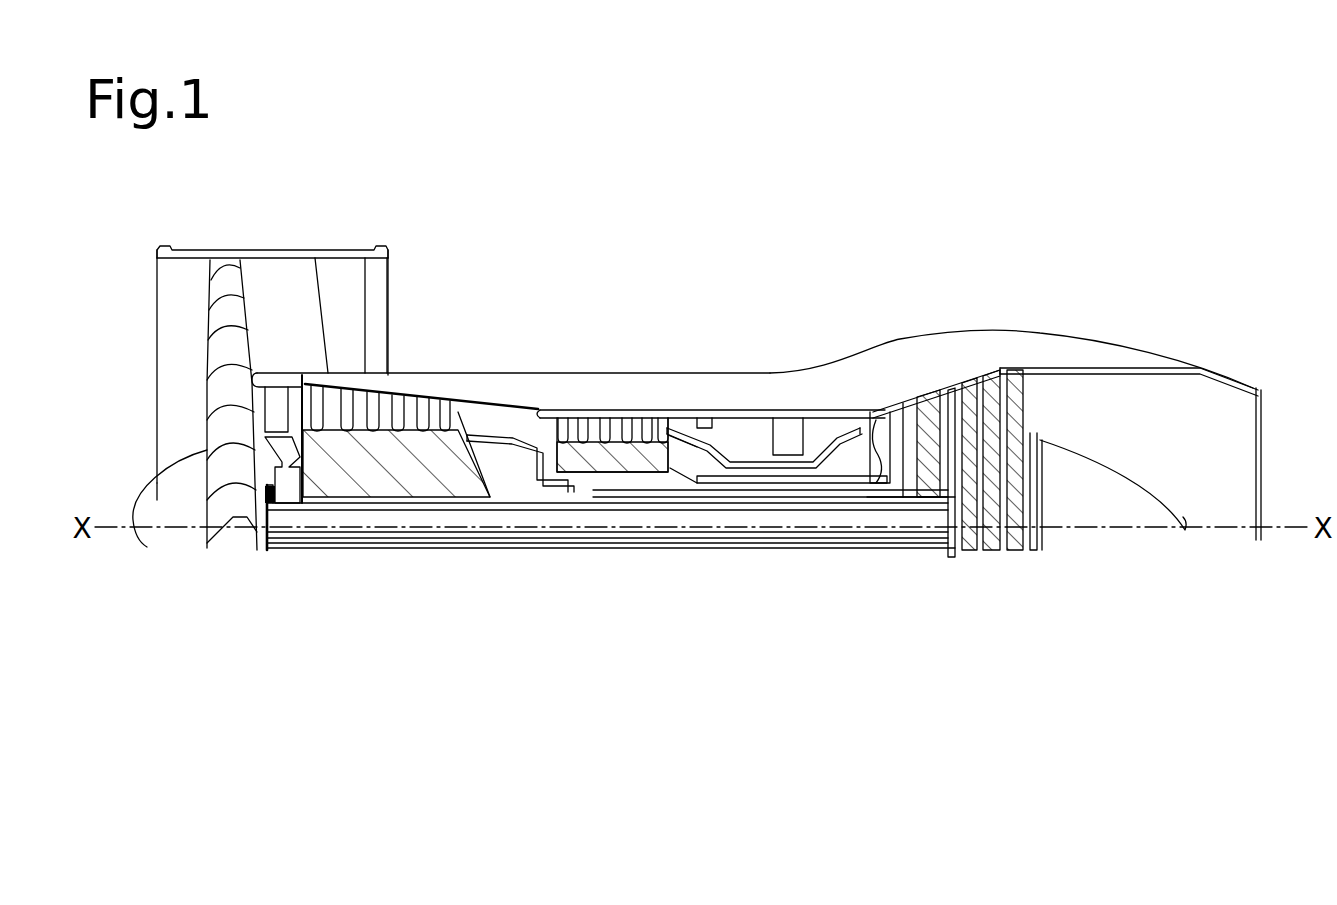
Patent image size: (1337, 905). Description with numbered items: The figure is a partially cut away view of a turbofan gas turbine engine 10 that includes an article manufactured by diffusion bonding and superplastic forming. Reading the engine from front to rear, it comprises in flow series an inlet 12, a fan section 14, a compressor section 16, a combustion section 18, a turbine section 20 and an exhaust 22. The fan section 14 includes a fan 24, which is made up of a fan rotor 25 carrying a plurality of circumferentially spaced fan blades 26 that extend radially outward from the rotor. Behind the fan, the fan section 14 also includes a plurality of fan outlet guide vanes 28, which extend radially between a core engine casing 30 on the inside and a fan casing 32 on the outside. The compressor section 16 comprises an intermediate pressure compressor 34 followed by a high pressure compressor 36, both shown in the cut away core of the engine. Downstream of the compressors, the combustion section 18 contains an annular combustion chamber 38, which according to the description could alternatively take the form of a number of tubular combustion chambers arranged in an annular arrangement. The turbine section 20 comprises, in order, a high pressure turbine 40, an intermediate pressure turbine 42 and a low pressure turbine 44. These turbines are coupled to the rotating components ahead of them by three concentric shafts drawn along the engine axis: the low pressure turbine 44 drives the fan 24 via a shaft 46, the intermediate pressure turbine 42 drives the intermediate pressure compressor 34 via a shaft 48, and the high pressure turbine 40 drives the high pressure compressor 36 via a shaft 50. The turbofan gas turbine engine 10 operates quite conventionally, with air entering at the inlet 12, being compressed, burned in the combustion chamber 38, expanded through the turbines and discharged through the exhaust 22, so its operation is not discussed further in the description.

The turbofan gas turbine engine 10 is at (609, 276).
The inlet 12 is at (115, 374).
The fan section 14 is at (150, 300).
The compressor section 16 is at (263, 600).
The combustion section 18 is at (790, 396).
The turbine section 20 is at (1035, 600).
The exhaust 22 is at (1264, 478).
The fan 24 is at (240, 297).
The fan rotor 25 is at (173, 510).
The fan blades 26 is at (218, 450).
The fan outlet guide vanes 28 is at (357, 283).
The core engine casing 30 is at (453, 383).
The fan casing 32 is at (298, 267).
The intermediate pressure compressor 34 is at (398, 442).
The high pressure compressor 36 is at (612, 417).
The annular combustion chamber 38 is at (745, 427).
The high pressure turbine 40 is at (865, 470).
The intermediate pressure turbine 42 is at (930, 450).
The low pressure turbine 44 is at (1000, 433).
The shaft 46 is at (440, 553).
The shaft 48 is at (577, 488).
The shaft 50 is at (858, 470).